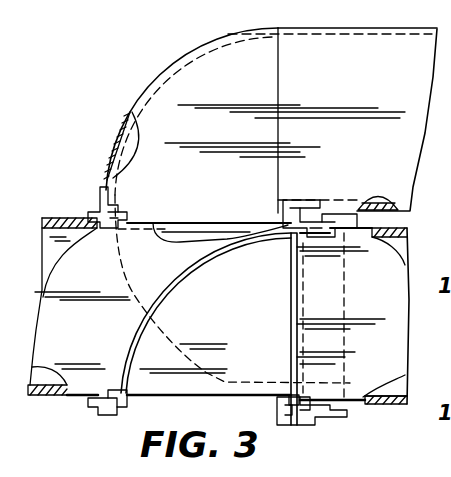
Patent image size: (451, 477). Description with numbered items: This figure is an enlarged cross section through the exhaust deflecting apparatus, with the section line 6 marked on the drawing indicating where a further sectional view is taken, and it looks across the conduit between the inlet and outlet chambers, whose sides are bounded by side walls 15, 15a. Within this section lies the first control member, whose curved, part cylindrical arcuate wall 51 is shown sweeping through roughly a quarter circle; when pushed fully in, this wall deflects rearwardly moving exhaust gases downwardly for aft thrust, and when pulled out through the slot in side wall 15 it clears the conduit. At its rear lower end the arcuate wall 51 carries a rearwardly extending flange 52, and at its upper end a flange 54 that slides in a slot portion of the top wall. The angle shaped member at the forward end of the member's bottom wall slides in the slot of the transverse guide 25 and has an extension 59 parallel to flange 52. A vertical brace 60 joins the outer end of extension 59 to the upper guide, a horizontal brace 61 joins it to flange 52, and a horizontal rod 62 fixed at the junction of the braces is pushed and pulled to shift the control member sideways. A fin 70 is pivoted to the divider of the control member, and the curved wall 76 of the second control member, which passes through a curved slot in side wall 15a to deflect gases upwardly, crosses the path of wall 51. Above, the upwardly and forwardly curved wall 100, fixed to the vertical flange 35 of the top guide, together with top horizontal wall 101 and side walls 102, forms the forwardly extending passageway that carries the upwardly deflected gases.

The section line 6- 6 is at (78, 212).
The side wall 15 is at (393, 341).
The side wall 15a is at (403, 390).
The guide 25 is at (285, 422).
The flange 35 is at (93, 199).
The arcuate wall 51 is at (130, 331).
The flange 52 is at (125, 412).
The flange 54 is at (318, 208).
The extension 59 is at (295, 418).
The vertical brace 60 is at (289, 300).
The horizontal brace 61 is at (173, 396).
The horizontal rod 62 is at (293, 395).
The fin 70 is at (340, 307).
The curved wall 76 is at (117, 267).
The curved wall 100 is at (150, 83).
The top horizontal wall 101 is at (393, 28).
The side walls 102 is at (358, 22).